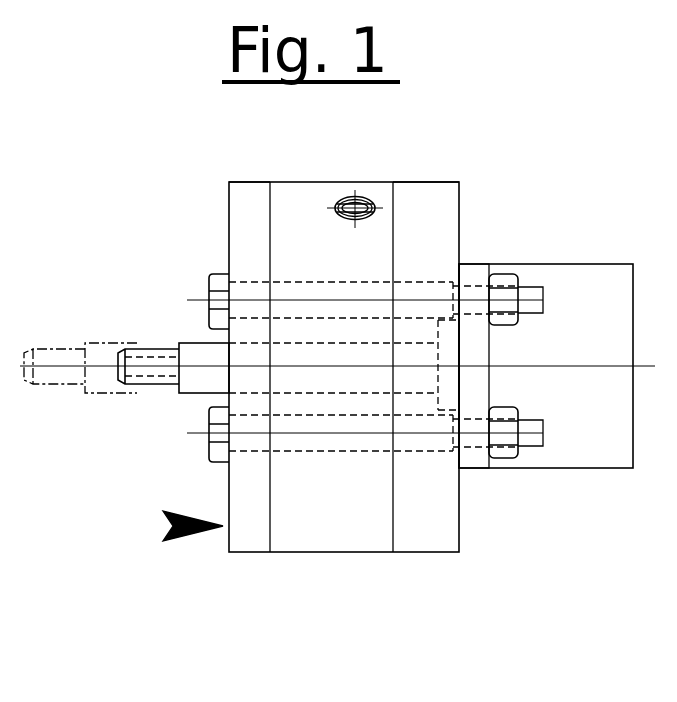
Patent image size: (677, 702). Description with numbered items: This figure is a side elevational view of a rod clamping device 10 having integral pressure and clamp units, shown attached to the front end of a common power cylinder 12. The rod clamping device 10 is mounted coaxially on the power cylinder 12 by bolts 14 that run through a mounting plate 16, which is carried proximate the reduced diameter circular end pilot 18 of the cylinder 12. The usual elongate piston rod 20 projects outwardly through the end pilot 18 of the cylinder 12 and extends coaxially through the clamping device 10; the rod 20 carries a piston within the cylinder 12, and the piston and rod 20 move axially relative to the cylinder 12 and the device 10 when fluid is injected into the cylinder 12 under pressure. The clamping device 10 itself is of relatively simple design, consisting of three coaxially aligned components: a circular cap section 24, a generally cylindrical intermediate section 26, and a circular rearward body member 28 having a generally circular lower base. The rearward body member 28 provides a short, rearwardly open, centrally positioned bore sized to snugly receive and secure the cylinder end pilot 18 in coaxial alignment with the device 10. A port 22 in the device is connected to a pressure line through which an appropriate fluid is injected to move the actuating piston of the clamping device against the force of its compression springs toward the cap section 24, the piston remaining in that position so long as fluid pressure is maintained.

The rod clamping device 10 is at (170, 526).
The power cylinder 12 is at (587, 344).
The bolts 14 is at (218, 283).
The mounting plate 16 is at (474, 270).
The end pilot 18 is at (452, 386).
The piston rod 20 is at (207, 383).
The port 22 is at (360, 200).
The cap section 24 is at (239, 229).
The intermediate section 26 is at (305, 160).
The rearward body member 28 is at (410, 195).